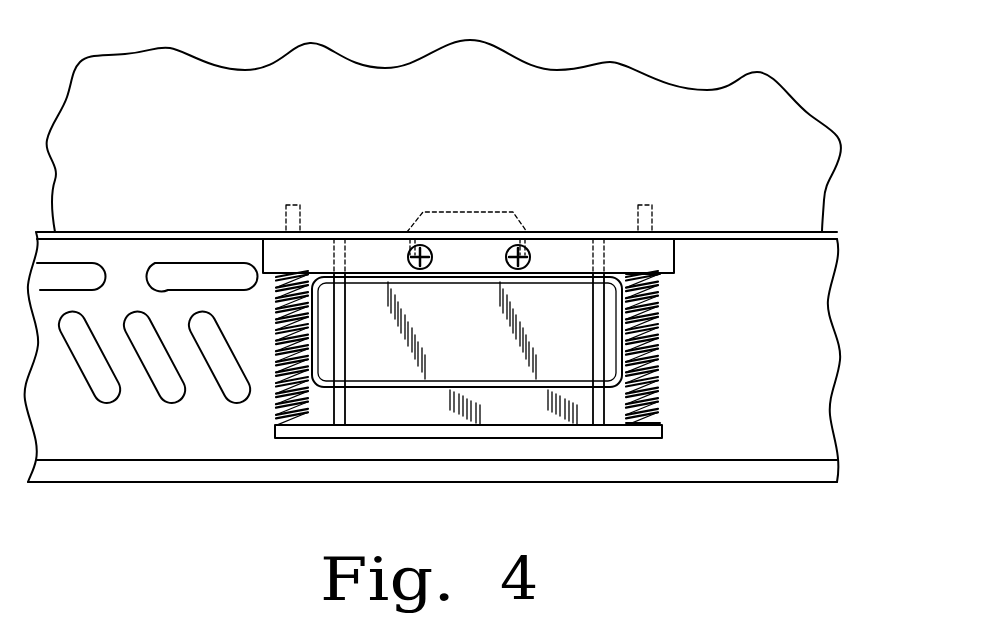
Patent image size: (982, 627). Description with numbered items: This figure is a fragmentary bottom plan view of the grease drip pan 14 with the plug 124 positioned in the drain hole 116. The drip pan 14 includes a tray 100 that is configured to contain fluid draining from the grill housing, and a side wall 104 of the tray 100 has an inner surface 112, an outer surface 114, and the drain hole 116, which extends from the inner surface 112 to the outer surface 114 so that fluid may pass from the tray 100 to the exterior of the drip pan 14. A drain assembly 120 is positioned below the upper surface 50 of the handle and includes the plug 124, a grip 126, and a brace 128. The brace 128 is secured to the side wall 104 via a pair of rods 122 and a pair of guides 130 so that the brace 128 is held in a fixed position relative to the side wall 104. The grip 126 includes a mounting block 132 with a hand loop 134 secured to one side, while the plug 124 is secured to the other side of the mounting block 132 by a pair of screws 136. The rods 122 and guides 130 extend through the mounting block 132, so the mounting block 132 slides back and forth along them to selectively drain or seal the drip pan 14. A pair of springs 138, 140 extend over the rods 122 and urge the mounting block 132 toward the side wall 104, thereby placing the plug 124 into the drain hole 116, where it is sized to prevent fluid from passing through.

The drip pan 14 is at (176, 118).
The upper surface 50 is at (798, 397).
The tray 100 is at (651, 77).
The side wall 104 is at (195, 231).
The inner surface 112 is at (709, 231).
The outer surface 114 is at (750, 243).
The drain hole 116 is at (530, 246).
The drain assembly 120 is at (265, 432).
The rods 122 is at (653, 412).
The plug 124 is at (473, 212).
The grip 126 is at (365, 256).
The brace 128 is at (357, 431).
The guides 130 is at (610, 400).
The mounting block 132 is at (567, 255).
The hand loop 134 is at (502, 384).
The screws 136 is at (413, 245).
The spring 138 is at (663, 360).
The spring 140 is at (277, 343).